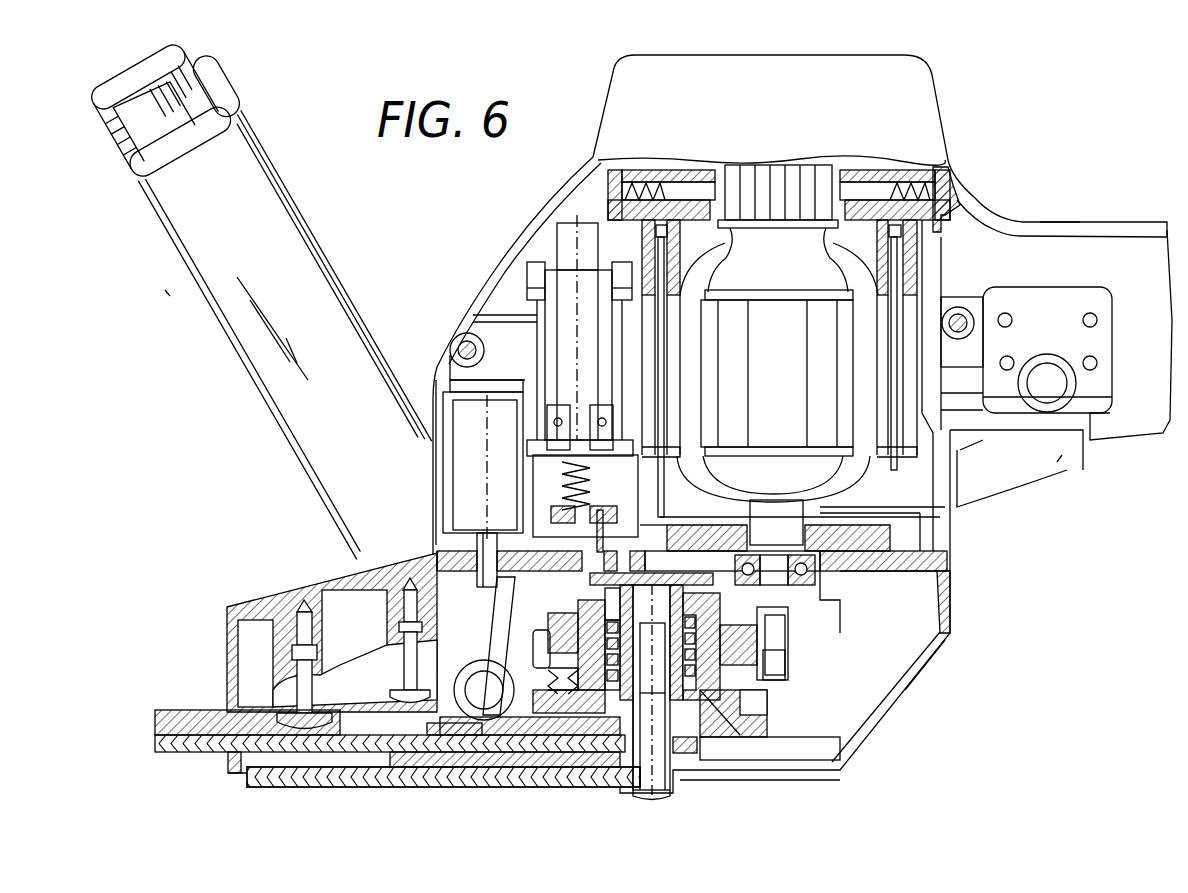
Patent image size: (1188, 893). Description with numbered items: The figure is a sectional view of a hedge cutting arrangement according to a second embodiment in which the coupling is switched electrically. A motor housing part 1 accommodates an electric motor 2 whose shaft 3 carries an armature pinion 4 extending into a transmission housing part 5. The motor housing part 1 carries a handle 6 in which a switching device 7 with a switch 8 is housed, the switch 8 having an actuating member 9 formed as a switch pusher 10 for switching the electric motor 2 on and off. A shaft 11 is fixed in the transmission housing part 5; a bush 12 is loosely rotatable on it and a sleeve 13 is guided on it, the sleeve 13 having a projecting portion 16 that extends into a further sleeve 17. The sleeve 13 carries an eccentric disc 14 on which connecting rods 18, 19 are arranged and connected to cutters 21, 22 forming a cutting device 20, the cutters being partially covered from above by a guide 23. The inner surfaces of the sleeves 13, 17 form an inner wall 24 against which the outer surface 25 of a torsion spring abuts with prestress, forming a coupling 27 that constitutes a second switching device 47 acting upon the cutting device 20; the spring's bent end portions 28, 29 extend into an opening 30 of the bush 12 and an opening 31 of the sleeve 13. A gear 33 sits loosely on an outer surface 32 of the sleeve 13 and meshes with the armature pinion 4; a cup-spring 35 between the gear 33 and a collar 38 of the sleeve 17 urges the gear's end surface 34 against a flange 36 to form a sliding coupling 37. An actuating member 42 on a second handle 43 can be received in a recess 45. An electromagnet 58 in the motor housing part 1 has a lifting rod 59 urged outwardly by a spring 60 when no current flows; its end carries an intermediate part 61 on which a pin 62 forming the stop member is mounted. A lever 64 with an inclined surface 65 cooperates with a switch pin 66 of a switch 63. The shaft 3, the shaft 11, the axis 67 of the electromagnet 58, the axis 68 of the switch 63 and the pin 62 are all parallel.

The motor housing part 1 is at (570, 200).
The electric motor 2 is at (790, 270).
The shaft 3 is at (785, 520).
The armature pinion 4 is at (780, 656).
The transmission housing part 5 is at (918, 676).
The handle 6 is at (1062, 208).
The switching device 7 is at (1103, 253).
The switch 8 is at (1100, 385).
The actuating member 9 is at (1060, 460).
The switch pusher 10 is at (1005, 470).
The shaft 11 is at (674, 795).
The bush 12 is at (651, 690).
The sleeve 13 is at (720, 705).
The eccentric disc 14 is at (768, 720).
The projecting portion 16 is at (598, 662).
The further sleeve 17 is at (695, 643).
The connecting rod 18 is at (430, 725).
The connecting rod 19 is at (478, 788).
The cutting device 20 is at (163, 758).
The cutter 21 is at (200, 738).
The cutter 22 is at (258, 787).
The guide 23 is at (165, 712).
The inner wall 24 is at (763, 618).
The outer surface 25 is at (705, 645).
The coupling 27 is at (585, 692).
The end portion 28 is at (622, 605).
The end portion 29 is at (697, 730).
The opening 30 is at (620, 600).
The opening 31 is at (678, 740).
The outer surface 32 is at (599, 645).
The gear 33 is at (545, 655).
The end surface 34 is at (565, 618).
The spring 35 is at (556, 688).
The flange 36 is at (775, 605).
The sliding coupling 37 is at (770, 630).
The collar 38 is at (765, 705).
The actuating member 42 is at (300, 232).
The second handle 43 is at (192, 315).
The recess 45 is at (147, 138).
The second switching device 47 is at (528, 616).
The electromagnet 58 is at (555, 342).
The lifting rod 59 is at (585, 478).
The spring 60 is at (588, 498).
The intermediate part 61 is at (565, 505).
The pin 62 is at (628, 503).
The switch 63 is at (460, 445).
The lever 64 is at (492, 612).
The inclined surface 65 is at (480, 590).
The switch pin 66 is at (434, 552).
The axis 67 is at (548, 232).
The axis 68 is at (432, 380).